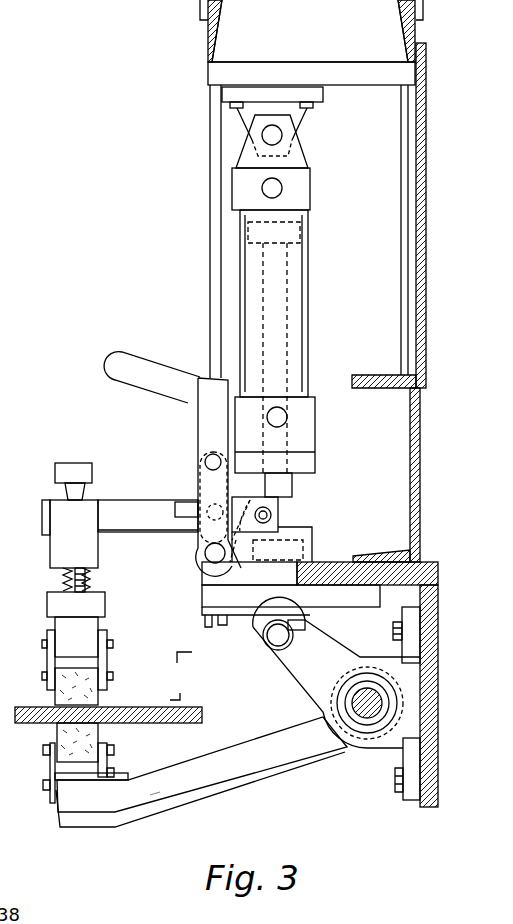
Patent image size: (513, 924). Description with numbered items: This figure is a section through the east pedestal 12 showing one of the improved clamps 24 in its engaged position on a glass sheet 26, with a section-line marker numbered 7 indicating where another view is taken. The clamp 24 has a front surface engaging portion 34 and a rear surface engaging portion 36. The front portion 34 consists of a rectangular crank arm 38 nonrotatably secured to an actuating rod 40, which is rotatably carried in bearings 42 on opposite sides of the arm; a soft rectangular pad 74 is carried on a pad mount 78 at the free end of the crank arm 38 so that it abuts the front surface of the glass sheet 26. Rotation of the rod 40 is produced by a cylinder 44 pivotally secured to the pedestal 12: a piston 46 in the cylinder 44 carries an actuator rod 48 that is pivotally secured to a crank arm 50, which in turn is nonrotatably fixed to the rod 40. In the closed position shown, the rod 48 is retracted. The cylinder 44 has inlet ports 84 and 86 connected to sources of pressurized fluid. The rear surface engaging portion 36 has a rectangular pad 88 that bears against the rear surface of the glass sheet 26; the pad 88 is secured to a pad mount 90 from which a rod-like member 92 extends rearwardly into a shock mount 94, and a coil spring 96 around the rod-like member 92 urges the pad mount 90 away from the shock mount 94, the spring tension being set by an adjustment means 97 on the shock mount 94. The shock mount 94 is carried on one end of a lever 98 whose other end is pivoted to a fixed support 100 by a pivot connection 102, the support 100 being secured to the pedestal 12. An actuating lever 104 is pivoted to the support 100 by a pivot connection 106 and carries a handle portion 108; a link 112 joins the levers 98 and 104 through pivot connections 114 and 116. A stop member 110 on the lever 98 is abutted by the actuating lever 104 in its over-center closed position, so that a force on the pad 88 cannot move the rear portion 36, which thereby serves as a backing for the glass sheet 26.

The east pedestal 12 is at (430, 807).
The clamp 24 is at (247, 788).
The glass sheet 26 is at (205, 710).
The front surface engaging portion 34 is at (47, 768).
The rear surface engaging portion 36 is at (168, 680).
The crank arm 38 is at (192, 803).
The actuating rod 40 is at (375, 717).
The bearings 42 is at (353, 742).
The cylinder 44 is at (308, 258).
The piston 46 is at (305, 228).
The actuator rod 48 is at (290, 502).
The crank arm 50 is at (300, 692).
The pad 74 is at (100, 735).
The pad mount 78 is at (50, 795).
The inlet port 84 is at (287, 417).
The inlet port 86 is at (282, 188).
The pad 88 is at (100, 695).
The pad mount 90 is at (107, 633).
The rod-like member 92 is at (88, 583).
The shock mount 94 is at (52, 547).
The coil spring 96 is at (88, 573).
The adjustment means 97 is at (88, 463).
The lever 98 is at (133, 505).
The fixed support 100 is at (360, 551).
The pivot connection 102 is at (271, 515).
The actuating lever 104 is at (202, 417).
The pivot connection 106 is at (205, 555).
The handle portion 108 is at (152, 340).
The stop member 110 is at (177, 502).
The link 112 is at (200, 480).
The pivot connection 114 is at (205, 545).
The pivot connection 116 is at (206, 460).
The section line 7 is at (33, 700).